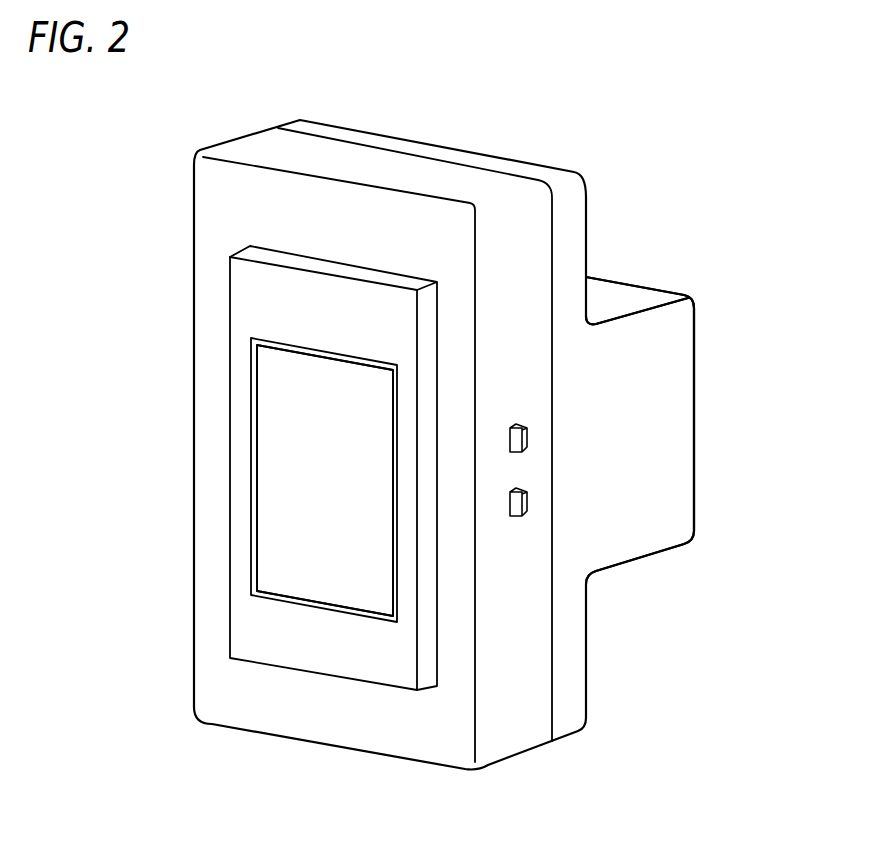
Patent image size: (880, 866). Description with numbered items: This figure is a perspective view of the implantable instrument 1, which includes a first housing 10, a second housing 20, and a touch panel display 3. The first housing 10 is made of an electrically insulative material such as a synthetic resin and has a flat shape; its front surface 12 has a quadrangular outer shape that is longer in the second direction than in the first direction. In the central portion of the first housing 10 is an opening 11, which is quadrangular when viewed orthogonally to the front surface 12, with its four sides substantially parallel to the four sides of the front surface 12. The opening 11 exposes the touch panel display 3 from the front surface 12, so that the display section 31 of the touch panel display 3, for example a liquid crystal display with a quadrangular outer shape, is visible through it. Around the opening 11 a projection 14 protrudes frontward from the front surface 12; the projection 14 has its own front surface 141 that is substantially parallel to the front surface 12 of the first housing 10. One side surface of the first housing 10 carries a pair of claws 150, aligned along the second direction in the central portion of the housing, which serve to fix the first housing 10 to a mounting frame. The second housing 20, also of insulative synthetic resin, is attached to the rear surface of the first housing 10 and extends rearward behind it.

The implantable instrument 1 is at (166, 132).
The first housing 10 is at (183, 270).
The front surface 12 is at (222, 202).
The projection 14 is at (218, 354).
The front surface of projection 141 is at (337, 302).
The touch panel display 3 is at (274, 552).
The display section 31 is at (298, 491).
The opening 11 is at (260, 442).
The pair of claws 150 is at (527, 440).
The second housing 20 is at (667, 432).